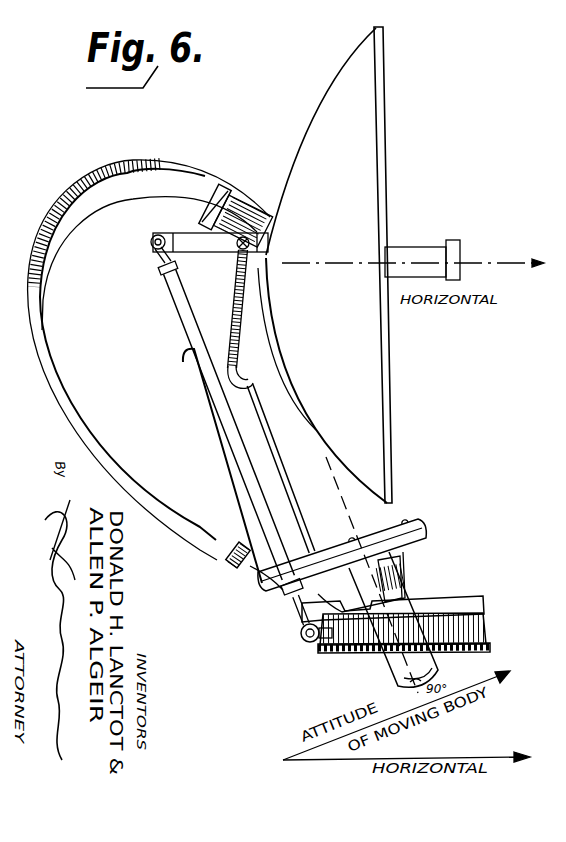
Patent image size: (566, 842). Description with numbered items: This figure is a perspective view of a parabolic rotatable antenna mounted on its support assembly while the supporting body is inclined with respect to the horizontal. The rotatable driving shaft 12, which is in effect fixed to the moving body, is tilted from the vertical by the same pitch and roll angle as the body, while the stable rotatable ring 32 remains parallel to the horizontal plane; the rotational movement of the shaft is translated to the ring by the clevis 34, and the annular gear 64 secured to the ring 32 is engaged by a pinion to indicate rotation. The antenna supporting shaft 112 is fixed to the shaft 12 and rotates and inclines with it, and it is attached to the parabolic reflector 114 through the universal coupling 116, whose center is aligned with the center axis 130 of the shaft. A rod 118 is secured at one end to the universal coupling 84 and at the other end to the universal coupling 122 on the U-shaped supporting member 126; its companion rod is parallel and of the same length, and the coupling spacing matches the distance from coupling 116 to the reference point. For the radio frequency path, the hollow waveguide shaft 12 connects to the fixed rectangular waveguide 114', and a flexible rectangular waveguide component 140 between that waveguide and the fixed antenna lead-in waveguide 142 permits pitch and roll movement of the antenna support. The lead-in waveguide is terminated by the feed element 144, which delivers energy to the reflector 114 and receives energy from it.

The rotatable driving shaft 12 is at (400, 580).
The rotatable ring 32 is at (470, 618).
The clevis 34 is at (393, 608).
The annular gear 64 is at (326, 655).
The universal coupling 84 is at (300, 636).
The antenna supporting shaft 112 is at (270, 477).
The parabolic reflector 114 is at (350, 265).
The rectangular waveguide 114' is at (250, 583).
The universal coupling 116 is at (270, 220).
The rod 118 is at (180, 311).
The universal coupling 122 is at (150, 243).
The U-shaped supporting member 126 is at (187, 233).
The center axis 130 is at (386, 513).
The flexible rectangular waveguide component 140 is at (170, 510).
The antenna lead-in waveguide 142 is at (238, 200).
The feed element 144 is at (460, 256).